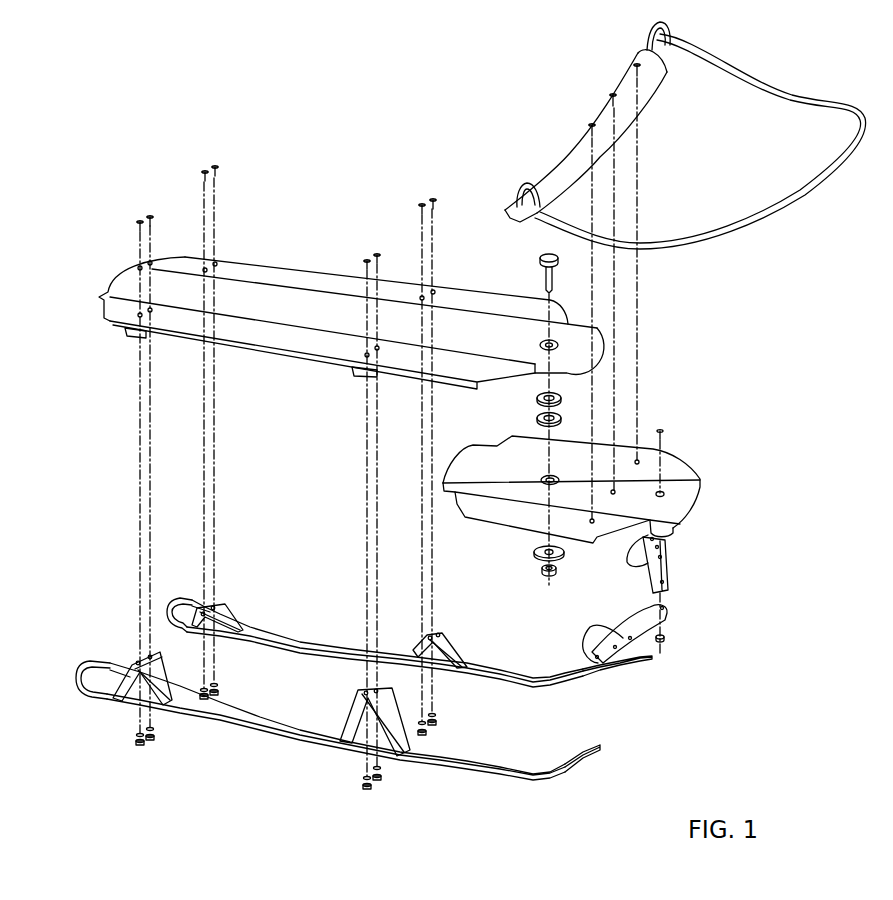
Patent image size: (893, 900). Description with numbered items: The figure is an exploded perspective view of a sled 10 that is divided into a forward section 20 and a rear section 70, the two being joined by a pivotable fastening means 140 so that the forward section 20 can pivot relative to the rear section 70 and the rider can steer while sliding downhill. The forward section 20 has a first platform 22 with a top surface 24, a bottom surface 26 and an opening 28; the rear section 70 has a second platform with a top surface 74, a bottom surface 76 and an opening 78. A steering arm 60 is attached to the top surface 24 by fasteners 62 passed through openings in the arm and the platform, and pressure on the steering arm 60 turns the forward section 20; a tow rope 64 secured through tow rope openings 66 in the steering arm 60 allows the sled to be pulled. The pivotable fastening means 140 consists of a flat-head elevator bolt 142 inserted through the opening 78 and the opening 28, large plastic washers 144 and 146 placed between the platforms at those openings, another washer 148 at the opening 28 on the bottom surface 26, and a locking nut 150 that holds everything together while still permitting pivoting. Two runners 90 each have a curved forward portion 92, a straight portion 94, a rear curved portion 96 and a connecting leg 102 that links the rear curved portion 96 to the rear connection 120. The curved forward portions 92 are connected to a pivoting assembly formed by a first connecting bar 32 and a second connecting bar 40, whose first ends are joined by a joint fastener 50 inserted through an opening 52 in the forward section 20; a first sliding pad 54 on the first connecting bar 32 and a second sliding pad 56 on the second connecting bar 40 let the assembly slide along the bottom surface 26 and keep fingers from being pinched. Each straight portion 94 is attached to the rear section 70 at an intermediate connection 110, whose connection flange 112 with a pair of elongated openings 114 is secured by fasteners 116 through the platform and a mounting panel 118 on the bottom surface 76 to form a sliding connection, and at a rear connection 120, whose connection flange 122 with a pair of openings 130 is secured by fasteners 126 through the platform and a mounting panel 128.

The sled 10 is at (287, 130).
The forward section 20 is at (748, 466).
The first platform 22 is at (677, 460).
The top surface 24 is at (680, 506).
The bottom surface 26 is at (662, 524).
The opening 28 is at (558, 477).
The first connecting bar 32 is at (645, 553).
The second connecting bar 40 is at (661, 627).
The joint fastener 50 is at (664, 428).
The opening 52 is at (665, 494).
The first sliding pad 54 is at (653, 556).
The second sliding pad 56 is at (592, 633).
The steering arm 60 is at (653, 90).
The fasteners 62 is at (637, 64).
The tow rope 64 is at (788, 100).
The tow rope openings 66 is at (662, 52).
The rear section 70 is at (93, 281).
The top surface 74 is at (207, 303).
The bottom surface 76 is at (268, 353).
The opening 78 is at (557, 343).
The runners 90 is at (693, 672).
The curved forward portion 92 is at (618, 677).
The straight portion 94 is at (302, 639).
The rear curved portion 96 is at (163, 612).
The connecting leg 102 is at (190, 605).
The intermediate connection 110 is at (450, 647).
The connection flange 112 is at (460, 655).
The elongated openings 114 is at (418, 625).
The fasteners 116 is at (377, 253).
The mounting panel 118 is at (360, 374).
The rear connection 120 is at (228, 615).
The connection flange 122 is at (238, 630).
The fasteners 126 is at (150, 215).
The mounting panel 128 is at (131, 336).
The openings 130 is at (203, 612).
The pivotable fastening means 140 is at (493, 279).
The flat-head elevator bolt 142 is at (557, 258).
The washer 144 is at (560, 397).
The washer 146 is at (560, 418).
The washer 148 is at (537, 553).
The locking nut 150 is at (560, 572).